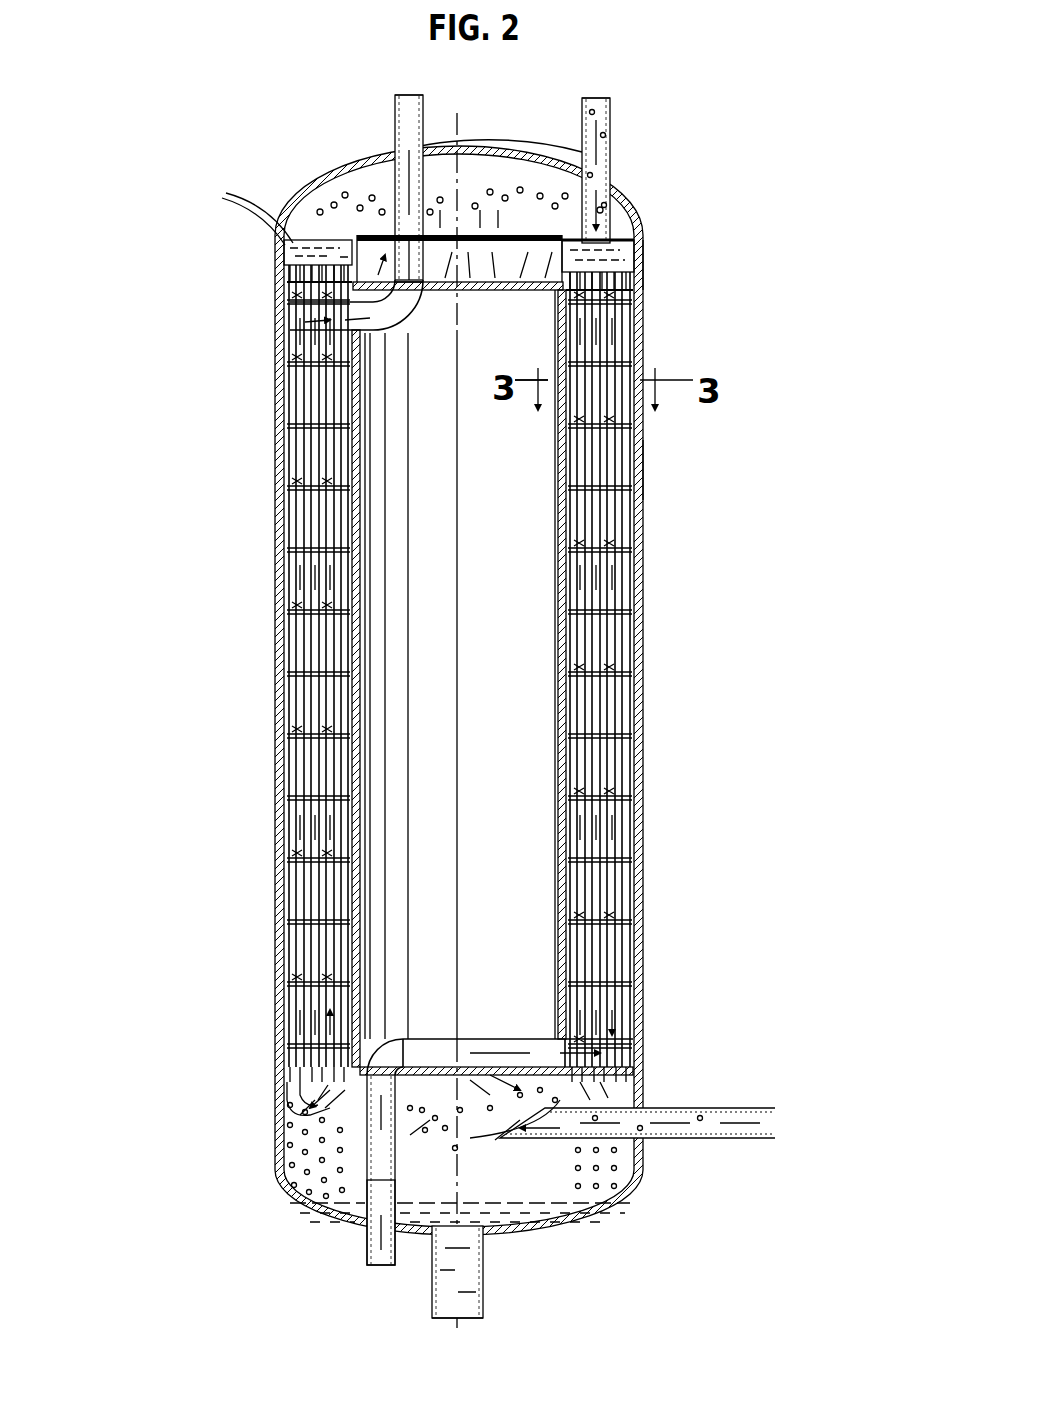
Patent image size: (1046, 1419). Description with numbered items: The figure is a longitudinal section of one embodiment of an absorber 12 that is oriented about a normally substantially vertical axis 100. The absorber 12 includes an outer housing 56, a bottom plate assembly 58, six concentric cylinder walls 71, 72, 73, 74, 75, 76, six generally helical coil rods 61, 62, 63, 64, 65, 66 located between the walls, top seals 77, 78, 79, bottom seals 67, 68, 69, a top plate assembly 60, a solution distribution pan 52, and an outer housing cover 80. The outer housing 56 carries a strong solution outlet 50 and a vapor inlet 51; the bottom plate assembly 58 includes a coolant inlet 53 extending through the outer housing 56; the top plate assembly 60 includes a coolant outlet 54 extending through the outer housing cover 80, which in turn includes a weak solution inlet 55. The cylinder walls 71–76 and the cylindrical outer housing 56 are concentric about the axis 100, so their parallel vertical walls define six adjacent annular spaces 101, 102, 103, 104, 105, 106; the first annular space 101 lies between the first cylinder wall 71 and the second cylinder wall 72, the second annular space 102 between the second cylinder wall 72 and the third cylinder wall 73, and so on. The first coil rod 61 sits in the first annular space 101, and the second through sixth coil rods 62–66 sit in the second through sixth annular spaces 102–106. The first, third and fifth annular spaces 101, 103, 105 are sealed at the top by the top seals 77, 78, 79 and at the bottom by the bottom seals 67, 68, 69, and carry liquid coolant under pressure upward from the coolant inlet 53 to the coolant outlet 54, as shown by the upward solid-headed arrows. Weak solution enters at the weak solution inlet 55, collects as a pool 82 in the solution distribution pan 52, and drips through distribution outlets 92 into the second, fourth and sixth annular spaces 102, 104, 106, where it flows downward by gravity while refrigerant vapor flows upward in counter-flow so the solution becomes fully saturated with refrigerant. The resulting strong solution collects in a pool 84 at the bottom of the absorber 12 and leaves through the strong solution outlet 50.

The absorber 12 is at (748, 400).
The strong solution outlet 50 is at (483, 1290).
The vapor inlet 51 is at (745, 1100).
The solution distribution pan 52 is at (643, 240).
The coolant inlet 53 is at (367, 1248).
The coolant outlet 54 is at (395, 118).
The weak solution inlet 55 is at (610, 128).
The outer housing 56 is at (641, 466).
The bottom plate assembly 58 is at (428, 1058).
The top plate assembly 60 is at (640, 362).
The first generally helical coil rod 61 is at (290, 924).
The second generally helical coil rod 62 is at (290, 790).
The third generally helical coil rod 63 is at (290, 858).
The fourth generally helical coil rod 64 is at (290, 752).
The fifth generally helical coil rod 65 is at (290, 852).
The sixth generally helical coil rod 66 is at (290, 735).
The bottom seal 67 is at (320, 1112).
The bottom seal 68 is at (287, 1082).
The bottom seal 69 is at (290, 1048).
The first cylinder wall 71 is at (290, 700).
The second cylinder wall 72 is at (290, 680).
The third cylinder wall 73 is at (290, 660).
The fourth cylinder wall 74 is at (290, 620).
The fifth cylinder wall 75 is at (285, 600).
The sixth cylinder wall 76 is at (275, 576).
The top seal 77 is at (290, 300).
The top seal 78 is at (290, 280).
The top seal 79 is at (290, 262).
The outer housing cover 80 is at (492, 148).
The pool 82 is at (300, 240).
The pool 84 is at (285, 1168).
The distribution outlets 92 is at (244, 214).
The vertical axis 100 is at (458, 718).
The first annular space 101 is at (275, 502).
The second annular space 102 is at (275, 478).
The third annular space 103 is at (275, 437).
The fourth annular space 104 is at (275, 420).
The fifth annular space 105 is at (275, 380).
The sixth annular space 106 is at (275, 342).